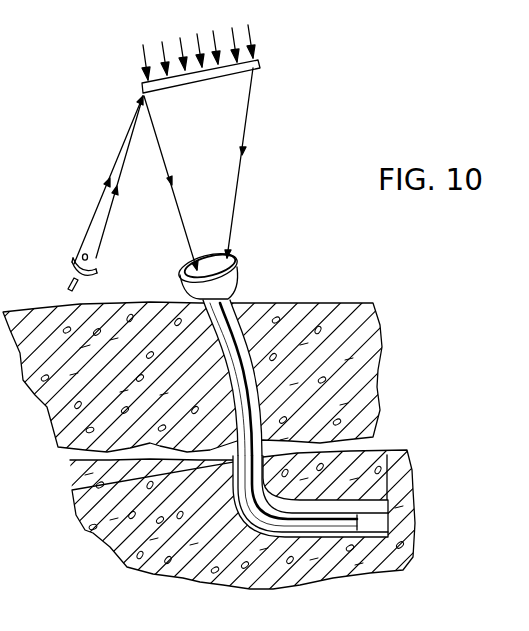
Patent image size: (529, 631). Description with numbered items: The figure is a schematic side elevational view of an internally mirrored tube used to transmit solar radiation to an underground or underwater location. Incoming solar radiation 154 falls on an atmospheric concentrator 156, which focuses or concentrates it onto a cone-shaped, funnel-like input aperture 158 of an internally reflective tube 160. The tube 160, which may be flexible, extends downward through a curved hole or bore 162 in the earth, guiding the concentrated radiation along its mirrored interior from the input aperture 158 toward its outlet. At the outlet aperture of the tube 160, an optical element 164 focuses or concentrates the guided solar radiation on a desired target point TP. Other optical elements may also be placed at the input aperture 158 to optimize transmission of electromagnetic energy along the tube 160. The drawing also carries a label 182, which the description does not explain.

The incoming solar radiation 154 is at (237, 40).
The atmospheric concentrator 156 is at (260, 70).
The cone-shaped input aperture 158 is at (240, 276).
The internally reflective tube 160 is at (297, 303).
The curved bore 162 is at (233, 574).
The optical element 164 is at (366, 532).
The target point TP is at (358, 519).
The remote light receiving area 182 is at (528, 585).